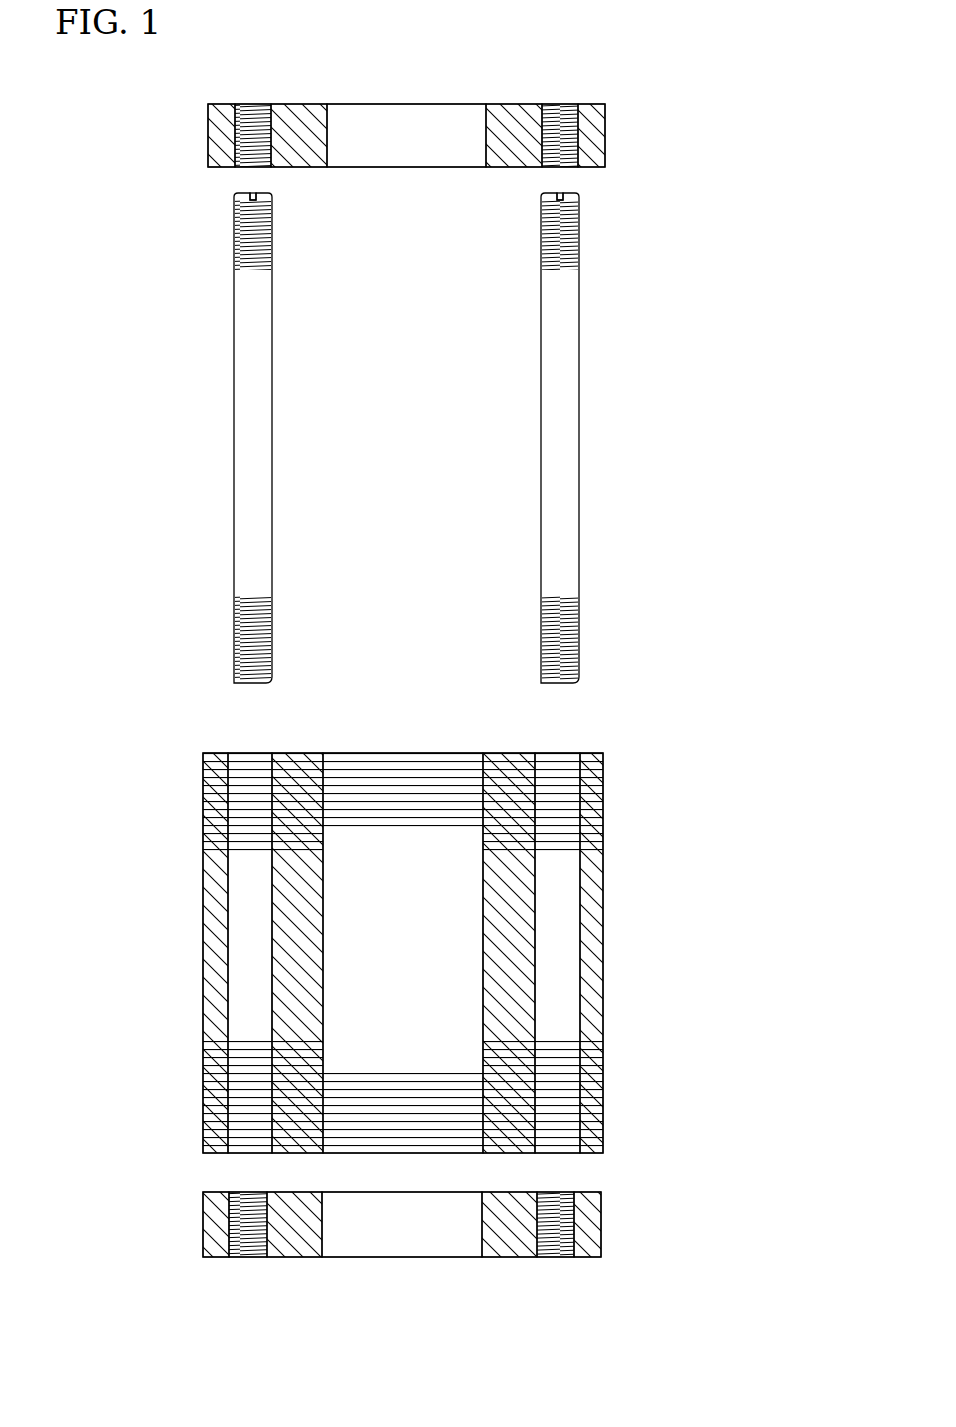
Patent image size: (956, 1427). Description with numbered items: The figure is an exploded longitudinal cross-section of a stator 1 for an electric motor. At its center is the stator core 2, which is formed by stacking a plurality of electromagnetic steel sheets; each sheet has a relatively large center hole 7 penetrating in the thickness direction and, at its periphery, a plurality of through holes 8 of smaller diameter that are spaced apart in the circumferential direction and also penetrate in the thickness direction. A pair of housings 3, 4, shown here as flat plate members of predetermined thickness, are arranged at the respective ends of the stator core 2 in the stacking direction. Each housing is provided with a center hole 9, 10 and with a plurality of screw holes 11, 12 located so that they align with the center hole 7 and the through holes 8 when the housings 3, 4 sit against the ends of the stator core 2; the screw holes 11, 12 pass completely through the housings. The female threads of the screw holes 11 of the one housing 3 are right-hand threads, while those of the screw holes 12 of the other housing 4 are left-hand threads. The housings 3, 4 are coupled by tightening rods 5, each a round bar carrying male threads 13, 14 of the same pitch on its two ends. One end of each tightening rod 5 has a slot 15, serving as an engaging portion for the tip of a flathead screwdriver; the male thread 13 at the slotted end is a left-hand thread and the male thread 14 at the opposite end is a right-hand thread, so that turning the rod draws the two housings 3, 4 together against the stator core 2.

The stator 1 is at (704, 118).
The stator core 2 is at (202, 928).
The housing 3 is at (202, 1227).
The housing 4 is at (205, 139).
The tightening rod 5 is at (231, 418).
The center hole 7 is at (480, 935).
The through hole 8 is at (238, 978).
The center hole 9 is at (331, 1242).
The center hole 10 is at (329, 122).
The screw hole 11 is at (256, 1242).
The screw hole 12 is at (257, 112).
The male thread 13 is at (236, 232).
The male thread 14 is at (236, 640).
The slot 15 is at (256, 196).